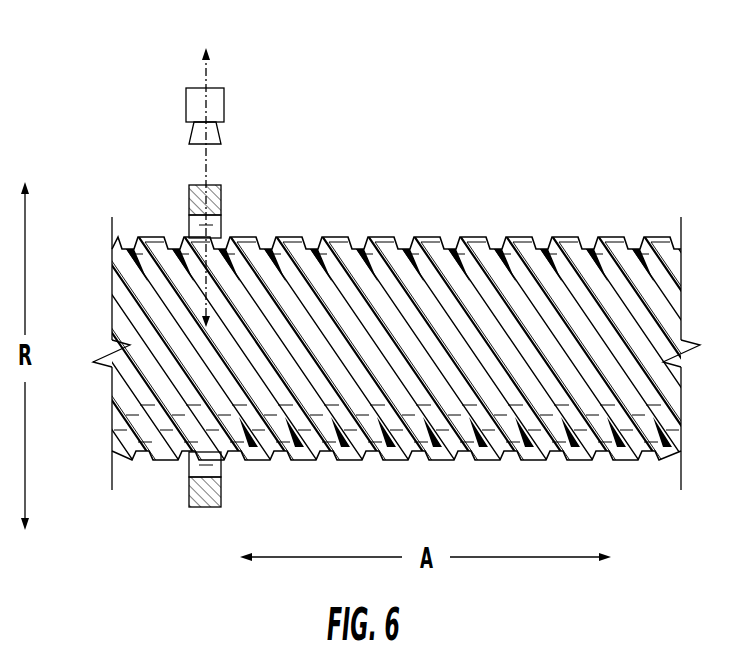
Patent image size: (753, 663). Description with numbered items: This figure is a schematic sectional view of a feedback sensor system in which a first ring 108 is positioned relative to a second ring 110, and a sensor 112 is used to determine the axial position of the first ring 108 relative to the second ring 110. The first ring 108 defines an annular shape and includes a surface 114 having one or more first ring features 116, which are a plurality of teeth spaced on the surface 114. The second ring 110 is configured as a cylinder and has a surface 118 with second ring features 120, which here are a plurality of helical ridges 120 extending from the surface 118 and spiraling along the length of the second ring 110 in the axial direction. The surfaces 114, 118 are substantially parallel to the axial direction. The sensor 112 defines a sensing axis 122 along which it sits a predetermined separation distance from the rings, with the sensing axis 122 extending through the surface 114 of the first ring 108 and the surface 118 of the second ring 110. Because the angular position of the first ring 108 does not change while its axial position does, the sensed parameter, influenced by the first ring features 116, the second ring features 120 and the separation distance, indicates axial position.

The first ring 108 is at (242, 207).
The second ring 110 is at (376, 317).
The sensor 112 is at (224, 105).
The surface 114 is at (178, 177).
The first ring features 116 is at (205, 507).
The surface 118 is at (362, 240).
The second ring features 120 is at (497, 272).
The sensing axis 122 is at (206, 70).